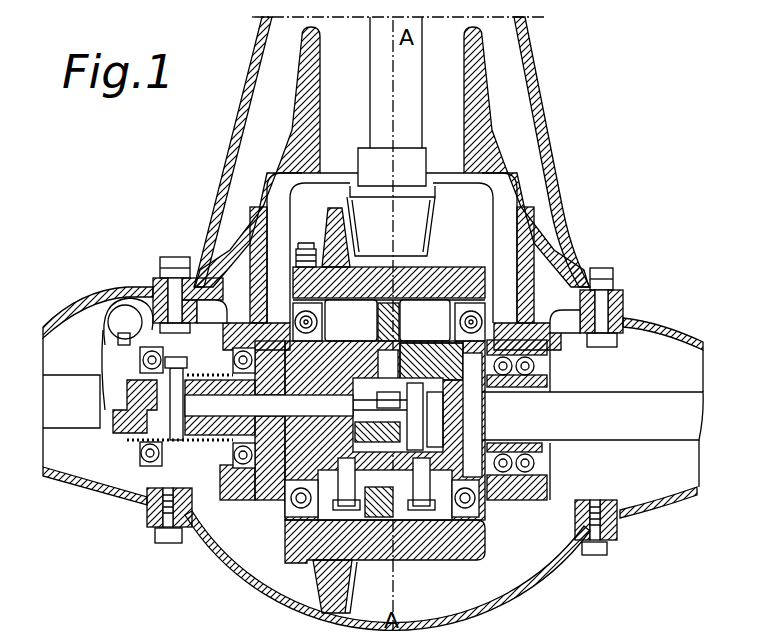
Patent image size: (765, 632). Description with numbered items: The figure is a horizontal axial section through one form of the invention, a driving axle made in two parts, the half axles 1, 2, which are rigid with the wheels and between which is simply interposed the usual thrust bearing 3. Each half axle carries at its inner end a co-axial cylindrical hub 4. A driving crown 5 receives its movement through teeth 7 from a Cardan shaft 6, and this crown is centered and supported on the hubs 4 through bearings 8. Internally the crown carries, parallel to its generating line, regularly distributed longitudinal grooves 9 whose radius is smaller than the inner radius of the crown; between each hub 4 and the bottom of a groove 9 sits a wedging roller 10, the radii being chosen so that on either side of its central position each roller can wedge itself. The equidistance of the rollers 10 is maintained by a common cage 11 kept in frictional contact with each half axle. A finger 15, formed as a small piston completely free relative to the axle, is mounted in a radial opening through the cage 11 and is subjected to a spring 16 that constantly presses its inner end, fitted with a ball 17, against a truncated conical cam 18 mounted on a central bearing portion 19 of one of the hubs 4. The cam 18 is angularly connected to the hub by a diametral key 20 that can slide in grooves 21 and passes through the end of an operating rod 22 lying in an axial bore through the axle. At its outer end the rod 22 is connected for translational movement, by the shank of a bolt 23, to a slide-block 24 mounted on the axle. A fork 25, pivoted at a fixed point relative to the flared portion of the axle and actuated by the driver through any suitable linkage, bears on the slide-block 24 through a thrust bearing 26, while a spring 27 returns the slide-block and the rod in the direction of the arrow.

The half axle 1 is at (85, 410).
The half axle 2 is at (600, 408).
The thrust bearing 3 is at (445, 421).
The cylindrical hub 4 is at (372, 315).
The driving crown 5 is at (425, 287).
The Cardan shaft 6 is at (404, 98).
The teeth 7 is at (348, 220).
The bearings 8 is at (300, 322).
The longitudinal grooves 9 is at (392, 385).
The wedging roller 10 is at (357, 317).
The cage 11 is at (412, 540).
The wedge block 15 is at (362, 547).
The spring 16 is at (392, 547).
The ball 17 is at (395, 437).
The conical cam 18 is at (407, 410).
The central bearing portion 19 is at (375, 403).
The diametral key 20 is at (490, 418).
The grooves 21 is at (407, 355).
The operating rod 22 is at (190, 440).
The bolt 23 is at (180, 447).
The slide-block 24 is at (130, 447).
The fork 25 is at (113, 352).
The thrust bearing 26 is at (152, 458).
The spring 27 is at (200, 370).